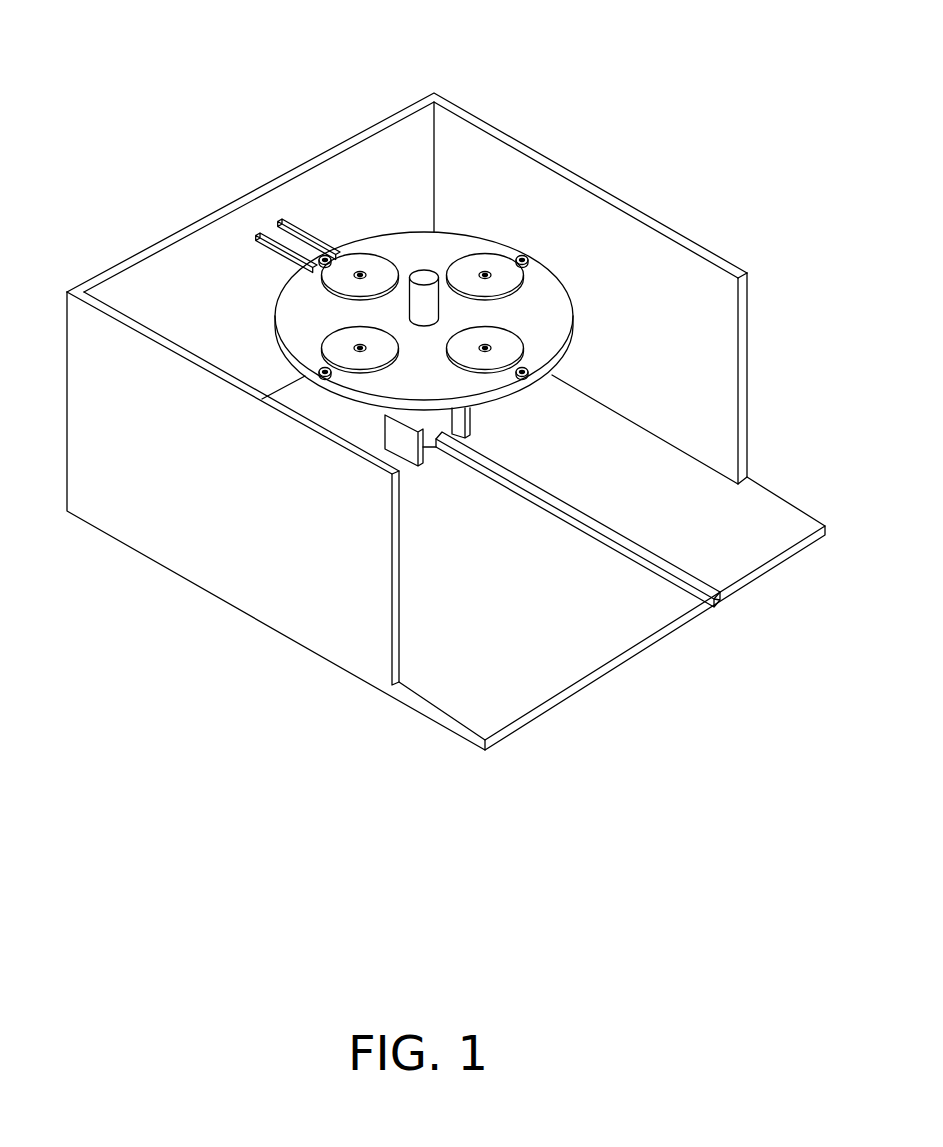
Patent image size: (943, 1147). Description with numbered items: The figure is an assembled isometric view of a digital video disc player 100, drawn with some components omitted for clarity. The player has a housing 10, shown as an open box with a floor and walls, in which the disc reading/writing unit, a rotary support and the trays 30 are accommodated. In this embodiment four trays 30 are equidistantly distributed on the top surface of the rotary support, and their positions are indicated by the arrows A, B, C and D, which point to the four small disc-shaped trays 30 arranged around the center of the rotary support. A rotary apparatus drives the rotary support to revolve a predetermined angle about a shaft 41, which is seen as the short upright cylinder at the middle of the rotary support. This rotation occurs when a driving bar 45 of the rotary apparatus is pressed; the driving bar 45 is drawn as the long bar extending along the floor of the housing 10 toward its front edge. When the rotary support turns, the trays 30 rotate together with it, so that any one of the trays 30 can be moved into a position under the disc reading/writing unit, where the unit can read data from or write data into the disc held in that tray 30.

The digital video disc player 100 is at (236, 54).
The housing 10 is at (537, 157).
The tray 30 is at (330, 352).
The shaft 41 is at (422, 275).
The driving bar 45 is at (637, 548).
The arrow A is at (357, 261).
The arrow B is at (497, 262).
The arrow C is at (517, 334).
The arrow D is at (330, 334).